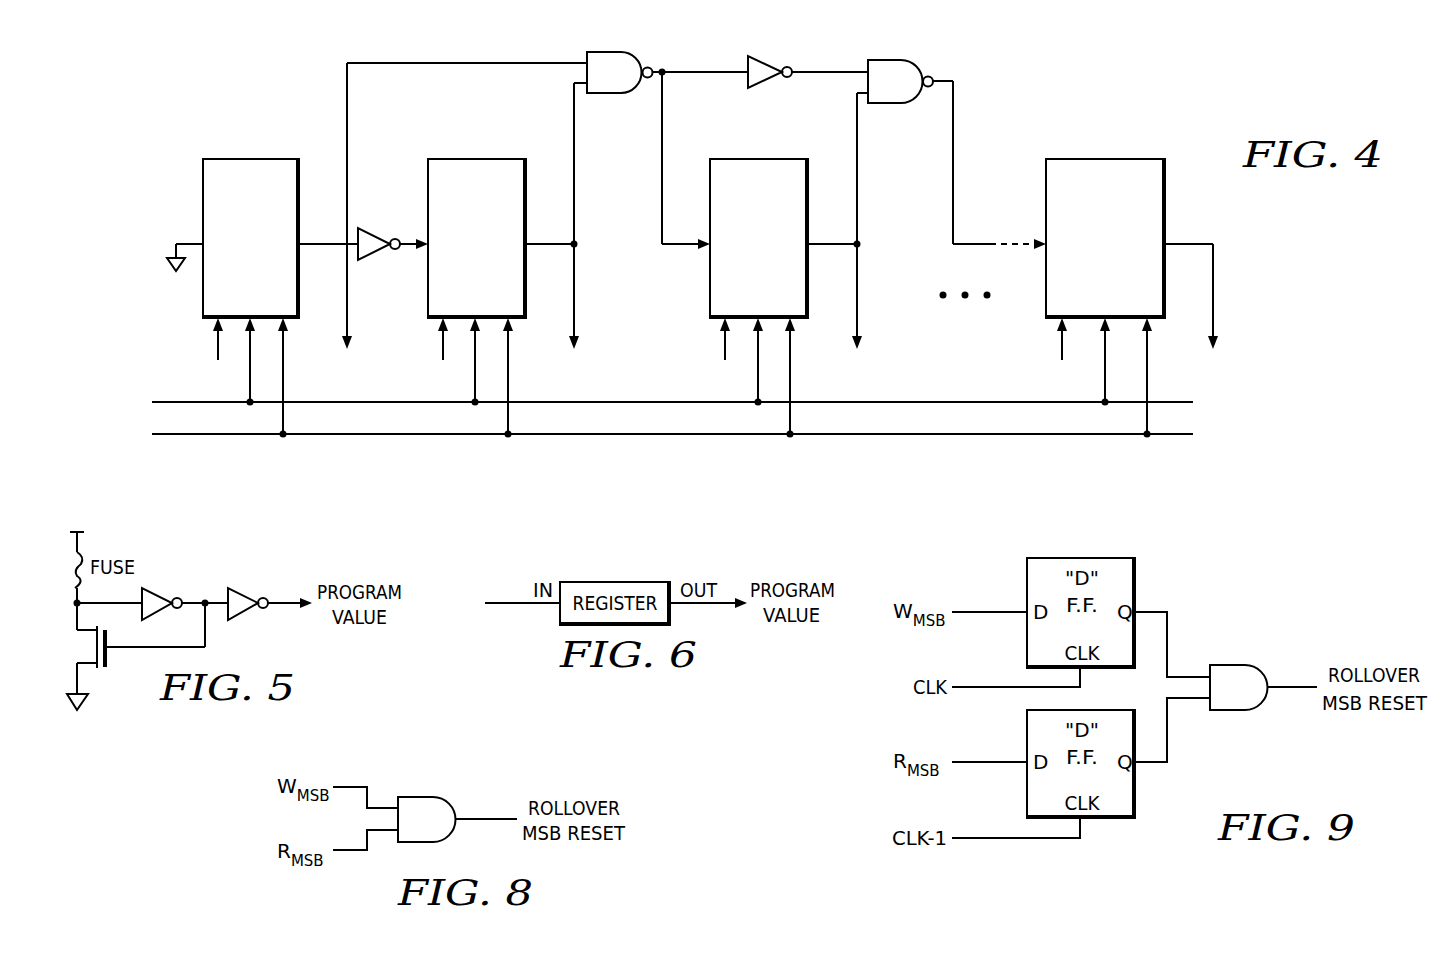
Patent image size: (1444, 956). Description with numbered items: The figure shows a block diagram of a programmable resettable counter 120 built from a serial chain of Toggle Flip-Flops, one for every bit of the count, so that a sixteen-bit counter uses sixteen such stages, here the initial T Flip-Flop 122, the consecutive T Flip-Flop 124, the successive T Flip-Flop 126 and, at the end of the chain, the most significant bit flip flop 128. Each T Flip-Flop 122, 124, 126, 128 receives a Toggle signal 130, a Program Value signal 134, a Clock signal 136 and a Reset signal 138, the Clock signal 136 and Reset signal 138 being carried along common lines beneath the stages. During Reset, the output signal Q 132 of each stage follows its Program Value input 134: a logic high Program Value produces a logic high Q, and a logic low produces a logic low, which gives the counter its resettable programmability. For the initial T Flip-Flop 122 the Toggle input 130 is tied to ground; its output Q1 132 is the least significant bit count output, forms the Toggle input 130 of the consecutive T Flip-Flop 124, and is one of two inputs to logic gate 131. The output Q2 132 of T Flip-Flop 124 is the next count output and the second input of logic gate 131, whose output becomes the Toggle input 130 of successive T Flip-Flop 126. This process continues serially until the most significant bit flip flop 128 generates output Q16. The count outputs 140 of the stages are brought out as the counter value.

The programmable resettable counter 120 is at (1209, 76).
The initial T Flip-Flop 122 is at (252, 159).
The consecutive T Flip-Flop 124 is at (478, 159).
The successive T Flip-Flop 126 is at (759, 159).
The most significant bit flip flop 128 is at (1106, 159).
The Toggle signal 130 is at (196, 243).
The logic gate 131 is at (607, 94).
The output signal Q 132 is at (300, 241).
The Program Value signal 134 is at (215, 341).
The Clock signal 136 is at (176, 401).
The Reset signal 138 is at (176, 436).
The count output 140 is at (347, 305).